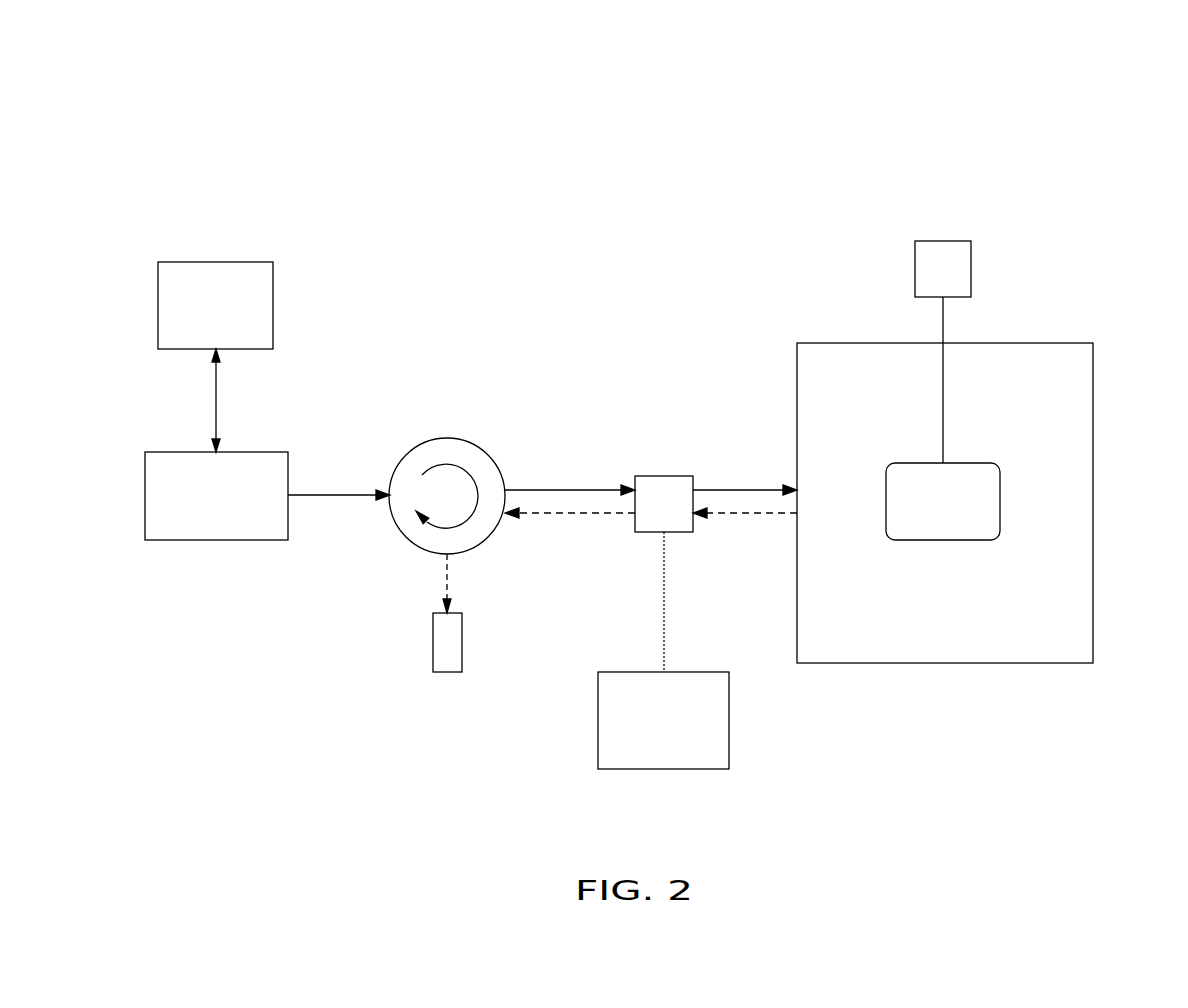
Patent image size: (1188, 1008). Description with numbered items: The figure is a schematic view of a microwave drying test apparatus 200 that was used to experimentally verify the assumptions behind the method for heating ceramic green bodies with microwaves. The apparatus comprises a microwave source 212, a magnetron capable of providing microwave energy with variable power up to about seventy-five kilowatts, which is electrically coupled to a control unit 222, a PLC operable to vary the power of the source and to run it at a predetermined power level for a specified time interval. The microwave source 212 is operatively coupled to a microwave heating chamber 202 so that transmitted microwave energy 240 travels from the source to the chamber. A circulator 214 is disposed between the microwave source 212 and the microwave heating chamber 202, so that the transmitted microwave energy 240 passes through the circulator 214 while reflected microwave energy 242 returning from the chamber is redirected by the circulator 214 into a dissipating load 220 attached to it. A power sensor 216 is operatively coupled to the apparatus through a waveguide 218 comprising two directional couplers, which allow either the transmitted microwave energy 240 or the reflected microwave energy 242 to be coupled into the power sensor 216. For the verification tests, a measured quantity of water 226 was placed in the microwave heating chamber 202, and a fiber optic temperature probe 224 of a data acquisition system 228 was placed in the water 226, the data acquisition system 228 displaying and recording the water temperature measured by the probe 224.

The microwave drying test apparatus 200 is at (904, 112).
The microwave heating chamber 202 is at (1093, 445).
The microwave source 212 is at (244, 452).
The circulator 214 is at (448, 438).
The power sensor 216 is at (690, 672).
The waveguide 218 is at (666, 476).
The dissipating load 220 is at (462, 645).
The control unit 222 is at (218, 262).
The fiber optic temperature probe 224 is at (945, 325).
The water 226 is at (945, 540).
The data acquisition system 228 is at (941, 241).
The transmitted microwave energy 240 is at (326, 493).
The reflected microwave energy 242 is at (578, 515).